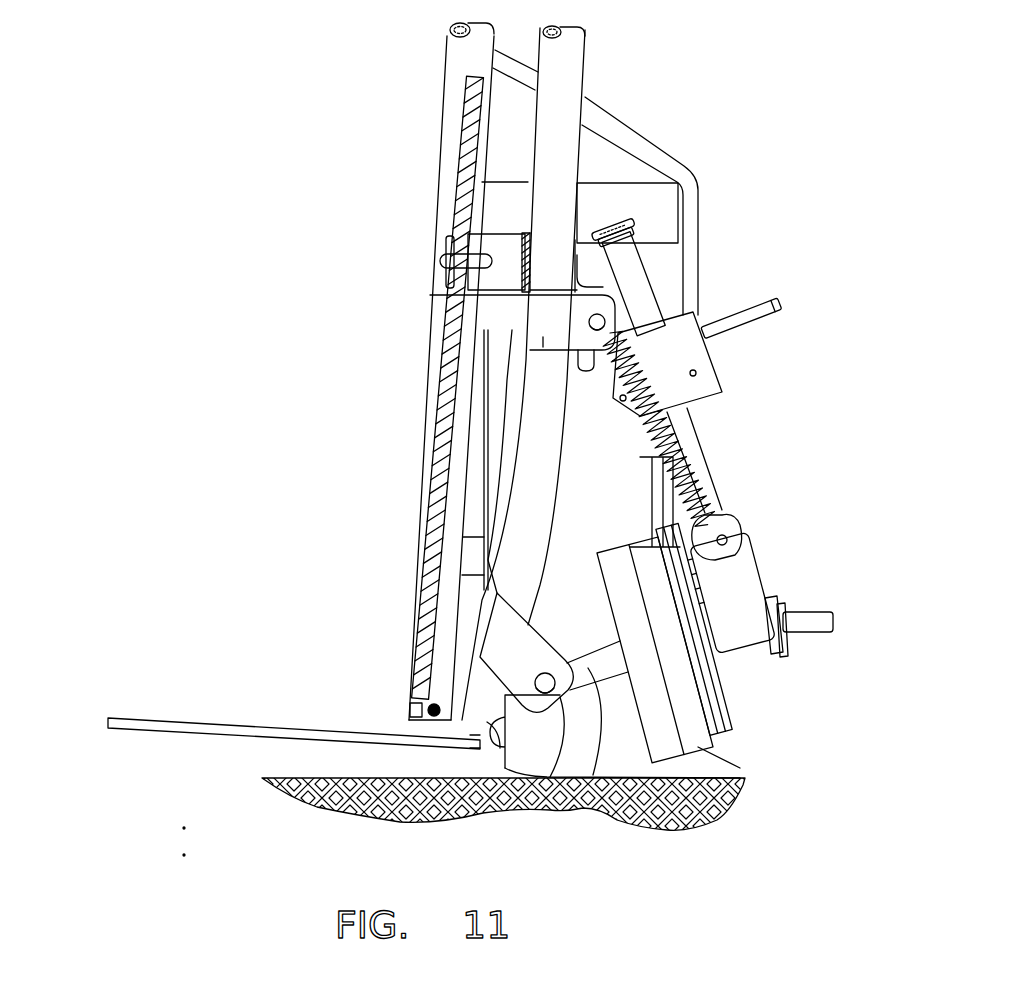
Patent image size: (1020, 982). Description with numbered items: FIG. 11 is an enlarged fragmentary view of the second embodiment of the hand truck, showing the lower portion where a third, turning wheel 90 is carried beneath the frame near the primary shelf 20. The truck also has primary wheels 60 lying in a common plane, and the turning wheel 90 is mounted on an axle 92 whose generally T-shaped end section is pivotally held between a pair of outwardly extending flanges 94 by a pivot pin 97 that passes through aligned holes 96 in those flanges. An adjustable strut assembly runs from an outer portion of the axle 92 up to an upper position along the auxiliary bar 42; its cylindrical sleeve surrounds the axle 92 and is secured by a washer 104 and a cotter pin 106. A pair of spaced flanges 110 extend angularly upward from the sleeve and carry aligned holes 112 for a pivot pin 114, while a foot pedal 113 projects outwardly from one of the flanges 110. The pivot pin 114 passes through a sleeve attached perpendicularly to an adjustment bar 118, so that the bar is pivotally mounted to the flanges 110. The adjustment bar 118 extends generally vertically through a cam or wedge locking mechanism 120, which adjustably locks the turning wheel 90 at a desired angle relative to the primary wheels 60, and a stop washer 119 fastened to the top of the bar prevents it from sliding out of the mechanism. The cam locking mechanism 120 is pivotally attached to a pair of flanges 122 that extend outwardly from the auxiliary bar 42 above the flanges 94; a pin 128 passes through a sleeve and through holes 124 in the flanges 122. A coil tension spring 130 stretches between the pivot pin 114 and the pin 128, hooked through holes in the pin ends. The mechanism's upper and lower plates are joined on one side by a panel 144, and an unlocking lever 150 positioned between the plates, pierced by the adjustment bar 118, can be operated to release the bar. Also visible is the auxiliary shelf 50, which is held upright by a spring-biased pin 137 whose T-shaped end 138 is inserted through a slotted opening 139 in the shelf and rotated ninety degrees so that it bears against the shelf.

The primary shelf 20 is at (145, 716).
The auxiliary bar 42 is at (570, 62).
The auxiliary shelf 50 is at (470, 103).
The primary wheels 60 is at (492, 748).
The third wheel 90 is at (700, 757).
The axle 92 is at (588, 680).
The flanges 94 is at (495, 640).
The holes 96 is at (556, 680).
The pivot pin 97 is at (540, 673).
The washer 104 is at (780, 660).
The cotter pin 106 is at (786, 640).
The flanges 110 is at (762, 572).
The holes 112 is at (738, 540).
The foot pedal 113 is at (820, 612).
The pivot pin 114 is at (705, 520).
The adjustment bar 118 is at (640, 300).
The stop washer 119 is at (636, 228).
The cam locking mechanism 120 is at (726, 388).
The flanges 122 is at (545, 349).
The holes 124 is at (590, 316).
The pin 128 is at (578, 360).
The coil tension spring 130 is at (645, 452).
The spring-biased pin 137 is at (640, 248).
The T-shaped end 138 is at (440, 262).
The slotted opening 139 is at (446, 258).
The panel 144 is at (695, 358).
The unlocking lever 150 is at (790, 300).